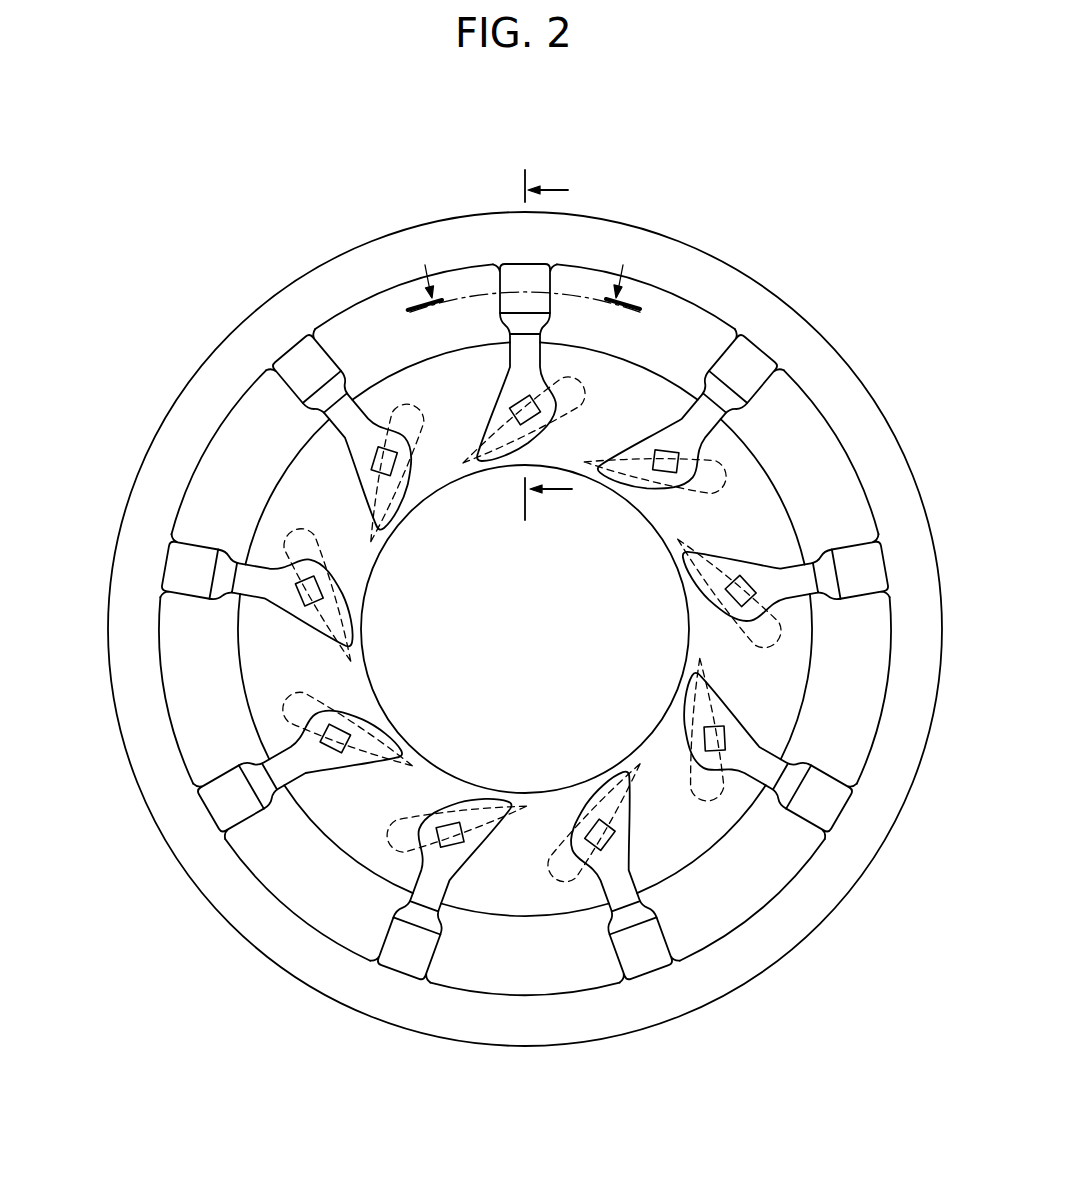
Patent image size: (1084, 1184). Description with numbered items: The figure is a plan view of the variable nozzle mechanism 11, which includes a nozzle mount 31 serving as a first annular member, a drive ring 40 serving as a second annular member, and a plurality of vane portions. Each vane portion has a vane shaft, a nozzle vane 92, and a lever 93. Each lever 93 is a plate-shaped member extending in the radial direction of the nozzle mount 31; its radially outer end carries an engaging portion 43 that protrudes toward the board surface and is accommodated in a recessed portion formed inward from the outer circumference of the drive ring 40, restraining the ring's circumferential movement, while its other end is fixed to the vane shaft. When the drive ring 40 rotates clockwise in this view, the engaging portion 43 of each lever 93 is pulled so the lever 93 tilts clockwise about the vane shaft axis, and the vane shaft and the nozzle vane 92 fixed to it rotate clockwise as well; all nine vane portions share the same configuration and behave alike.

The variable nozzle mechanism 11 is at (688, 223).
The nozzle mount 31 is at (258, 671).
The drive ring 40 is at (250, 412).
The engaging portion 43 is at (510, 261).
The nozzle vane 92 is at (285, 537).
The lever 93 is at (305, 350).